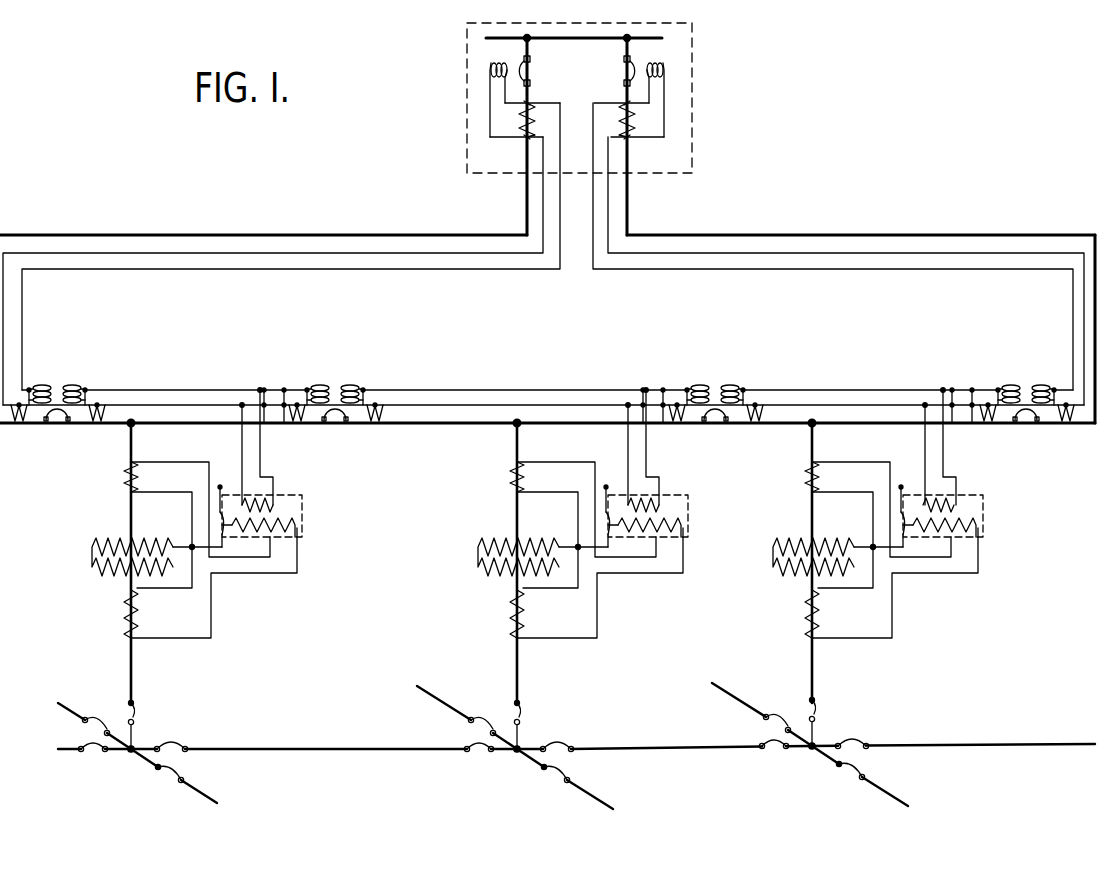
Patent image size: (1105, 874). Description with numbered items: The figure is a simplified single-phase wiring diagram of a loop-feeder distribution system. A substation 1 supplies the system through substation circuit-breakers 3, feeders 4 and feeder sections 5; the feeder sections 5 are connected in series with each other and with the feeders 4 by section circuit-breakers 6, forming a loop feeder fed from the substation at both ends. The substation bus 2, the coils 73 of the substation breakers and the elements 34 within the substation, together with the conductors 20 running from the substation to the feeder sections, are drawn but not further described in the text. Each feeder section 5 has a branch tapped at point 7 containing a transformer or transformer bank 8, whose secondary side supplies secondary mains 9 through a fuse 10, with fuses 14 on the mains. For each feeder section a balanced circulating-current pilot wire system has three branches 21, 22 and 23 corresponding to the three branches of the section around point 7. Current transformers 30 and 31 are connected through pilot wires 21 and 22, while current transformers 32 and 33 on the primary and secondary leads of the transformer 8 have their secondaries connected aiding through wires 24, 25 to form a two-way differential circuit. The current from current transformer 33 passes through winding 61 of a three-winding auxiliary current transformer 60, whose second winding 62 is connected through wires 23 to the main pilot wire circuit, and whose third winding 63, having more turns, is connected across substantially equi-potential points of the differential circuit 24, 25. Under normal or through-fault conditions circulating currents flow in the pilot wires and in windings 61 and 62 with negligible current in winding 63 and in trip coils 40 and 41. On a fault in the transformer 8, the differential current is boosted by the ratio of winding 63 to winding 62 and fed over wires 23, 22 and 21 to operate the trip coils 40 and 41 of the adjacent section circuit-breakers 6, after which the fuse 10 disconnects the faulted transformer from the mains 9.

The substation 1 is at (695, 92).
The generator bus 2 is at (573, 38).
The substation circuit-breaker 3 is at (523, 72).
The feeder 4 is at (218, 236).
The feeder section 5 is at (166, 426).
The section circuit-breaker 6 is at (56, 424).
The tap point 7 is at (133, 426).
The transformer or transformer bank 8 is at (92, 550).
The secondary mains 9 is at (297, 748).
The fuse 10 is at (132, 716).
The fuse 14 is at (86, 726).
The pilot wire 20 is at (243, 258).
The pilot wire 21 is at (132, 390).
The pilot wire 22 is at (264, 390).
The pilot wire 23 is at (258, 458).
The wire 24 is at (176, 492).
The wire 25 is at (180, 636).
The current transformer 30 is at (90, 424).
The current transformer 31 is at (20, 424).
The current transformer 32 is at (124, 485).
The current transformer 33 is at (126, 616).
The resistor 34 is at (525, 121).
The trip coil 40 is at (68, 386).
The trip coil 41 is at (46, 386).
The three-winding auxiliary current transformer 60 is at (302, 508).
The winding 61 is at (298, 526).
The second winding 62 is at (274, 502).
The third winding 63 is at (553, 507).
The trip coil 73 is at (494, 61).